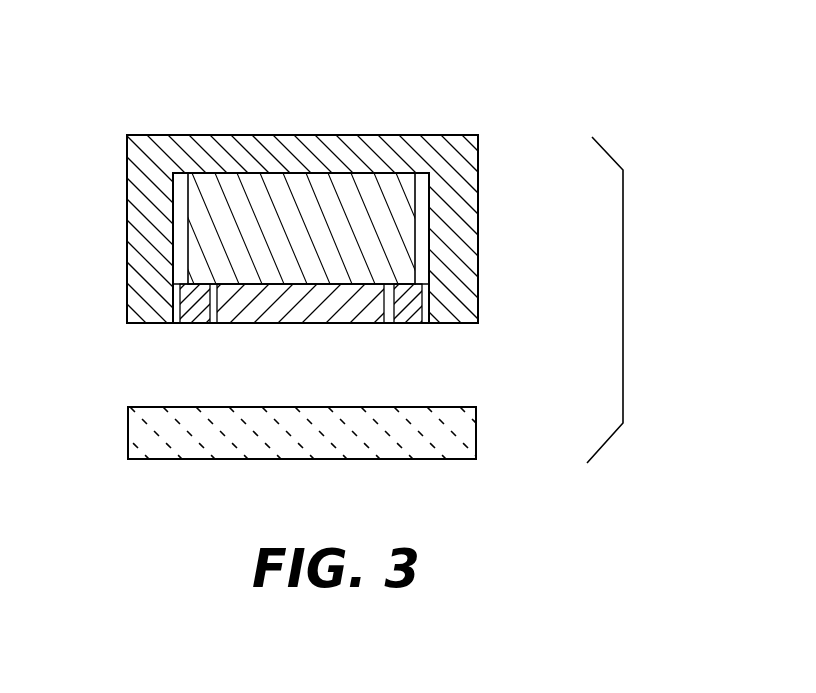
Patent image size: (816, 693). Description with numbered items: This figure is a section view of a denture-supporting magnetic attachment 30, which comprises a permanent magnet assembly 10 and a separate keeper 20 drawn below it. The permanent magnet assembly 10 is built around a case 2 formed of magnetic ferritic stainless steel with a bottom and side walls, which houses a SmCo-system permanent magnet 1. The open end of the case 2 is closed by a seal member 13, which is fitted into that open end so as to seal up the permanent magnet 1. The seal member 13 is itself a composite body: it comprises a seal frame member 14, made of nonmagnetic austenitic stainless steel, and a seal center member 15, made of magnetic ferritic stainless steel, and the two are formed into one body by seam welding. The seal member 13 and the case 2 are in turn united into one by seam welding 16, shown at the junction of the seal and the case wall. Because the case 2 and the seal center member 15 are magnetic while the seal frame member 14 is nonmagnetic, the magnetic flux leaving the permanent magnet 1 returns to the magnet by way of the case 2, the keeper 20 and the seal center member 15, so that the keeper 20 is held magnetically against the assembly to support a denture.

The permanent magnet assembly 10 is at (283, 102).
The permanent magnet 1 is at (372, 195).
The case 2 is at (466, 238).
The seal member 13 is at (284, 285).
The seal frame member 14 is at (408, 316).
The seal center member 15 is at (261, 306).
The seam welding 16 is at (179, 304).
The keeper 20 is at (287, 452).
The denture-supporting magnetic attachment 30 is at (628, 300).